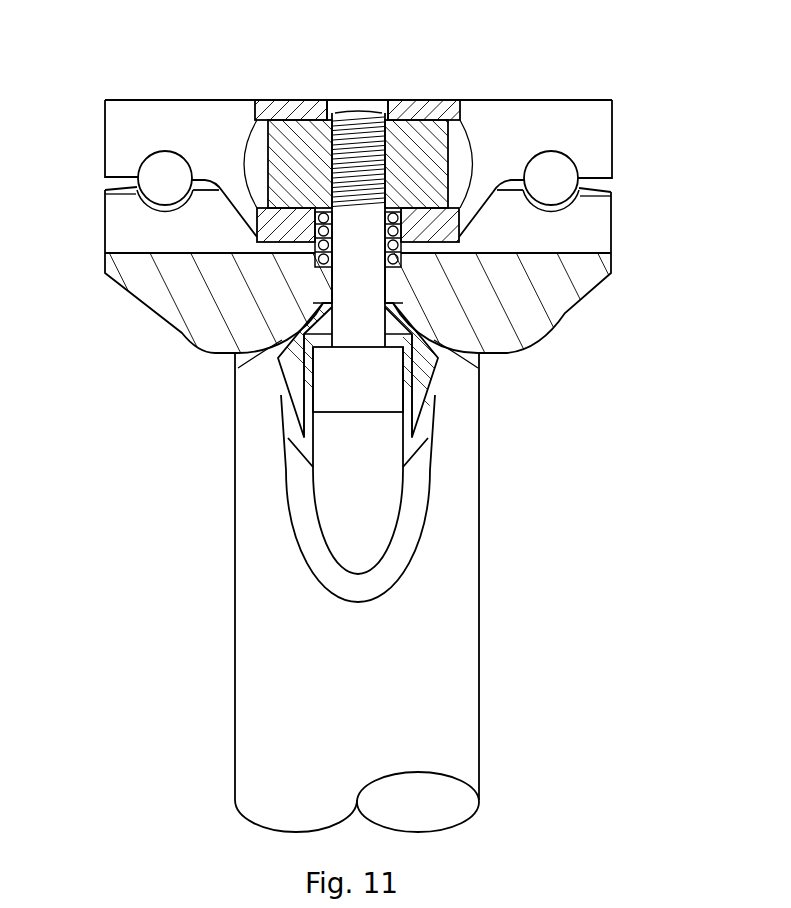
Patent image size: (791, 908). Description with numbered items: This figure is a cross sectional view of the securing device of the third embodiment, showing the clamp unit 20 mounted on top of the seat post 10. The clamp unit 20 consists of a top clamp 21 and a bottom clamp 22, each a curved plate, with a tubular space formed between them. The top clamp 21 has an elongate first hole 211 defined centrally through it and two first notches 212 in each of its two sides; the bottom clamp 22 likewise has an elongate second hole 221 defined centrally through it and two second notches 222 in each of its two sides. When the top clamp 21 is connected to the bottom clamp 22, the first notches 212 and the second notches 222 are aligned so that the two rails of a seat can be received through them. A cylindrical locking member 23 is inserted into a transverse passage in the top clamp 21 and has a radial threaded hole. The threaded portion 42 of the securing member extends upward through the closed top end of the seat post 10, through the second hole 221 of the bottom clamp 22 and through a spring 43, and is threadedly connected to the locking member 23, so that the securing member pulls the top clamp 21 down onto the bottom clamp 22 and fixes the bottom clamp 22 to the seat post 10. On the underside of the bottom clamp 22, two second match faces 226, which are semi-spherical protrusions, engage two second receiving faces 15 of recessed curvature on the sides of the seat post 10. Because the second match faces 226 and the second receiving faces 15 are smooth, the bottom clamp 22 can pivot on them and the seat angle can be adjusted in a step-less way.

The seat post 10 is at (463, 672).
The second receiving faces 15 is at (358, 471).
The clamp unit 20 is at (395, 454).
The top clamp 21 is at (538, 94).
The bottom clamp 22 is at (568, 320).
The locking member 23 is at (287, 175).
The threaded portion 42 is at (353, 127).
The spring 43 is at (317, 263).
The first hole 211 is at (335, 107).
The first notches 212 is at (148, 173).
The second hole 221 is at (385, 290).
The second notches 222 is at (137, 188).
The second match faces 226 is at (332, 305).